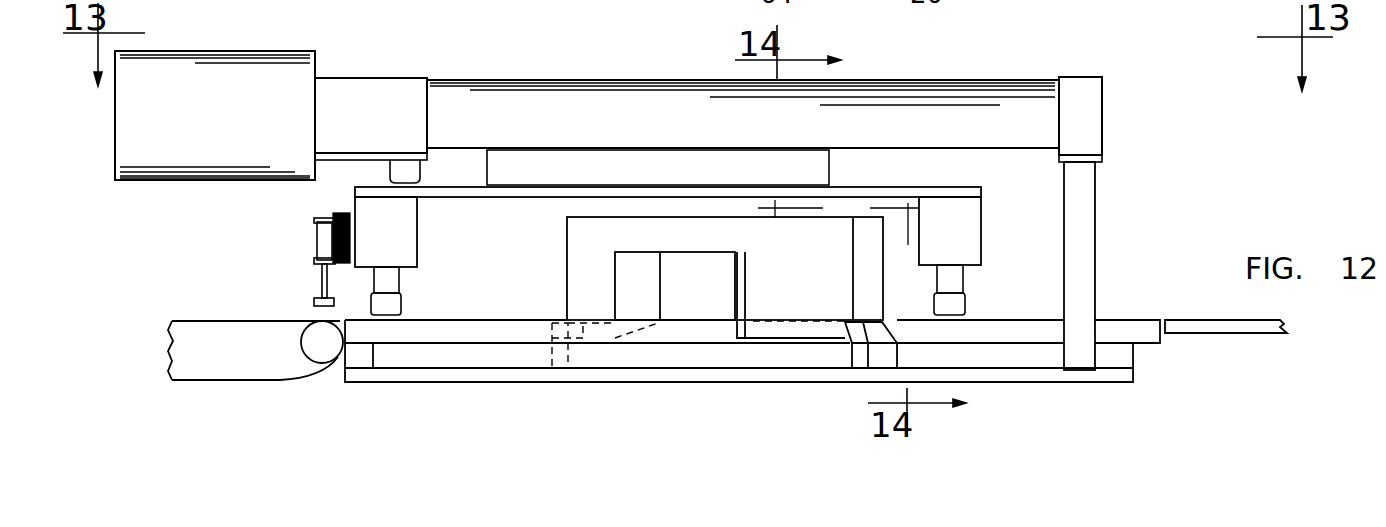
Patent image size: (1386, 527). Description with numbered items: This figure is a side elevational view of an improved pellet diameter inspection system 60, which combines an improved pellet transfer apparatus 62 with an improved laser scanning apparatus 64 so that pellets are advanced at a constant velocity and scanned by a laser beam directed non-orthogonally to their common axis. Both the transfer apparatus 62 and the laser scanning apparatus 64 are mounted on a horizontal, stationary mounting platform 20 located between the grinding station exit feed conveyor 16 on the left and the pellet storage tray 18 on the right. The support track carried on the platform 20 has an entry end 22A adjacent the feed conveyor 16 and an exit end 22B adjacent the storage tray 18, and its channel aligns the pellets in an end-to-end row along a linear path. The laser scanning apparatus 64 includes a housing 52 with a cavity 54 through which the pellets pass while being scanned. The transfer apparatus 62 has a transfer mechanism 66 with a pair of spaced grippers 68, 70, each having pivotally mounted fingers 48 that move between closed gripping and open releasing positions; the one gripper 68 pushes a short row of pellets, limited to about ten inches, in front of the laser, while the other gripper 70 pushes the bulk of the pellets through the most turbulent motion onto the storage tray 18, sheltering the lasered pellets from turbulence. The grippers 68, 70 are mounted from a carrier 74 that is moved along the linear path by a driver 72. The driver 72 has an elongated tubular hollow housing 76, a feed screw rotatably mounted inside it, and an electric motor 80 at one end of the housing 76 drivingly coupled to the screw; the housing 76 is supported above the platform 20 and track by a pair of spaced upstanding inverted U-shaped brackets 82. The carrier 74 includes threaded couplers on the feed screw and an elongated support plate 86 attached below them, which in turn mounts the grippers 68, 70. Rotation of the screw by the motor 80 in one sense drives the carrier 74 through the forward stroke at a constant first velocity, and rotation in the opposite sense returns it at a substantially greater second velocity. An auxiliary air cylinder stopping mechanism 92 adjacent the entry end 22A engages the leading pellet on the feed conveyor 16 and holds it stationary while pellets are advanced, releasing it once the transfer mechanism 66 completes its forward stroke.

The feed conveyor 16 is at (230, 375).
The storage tray 18 is at (1243, 333).
The mounting platform 20 is at (565, 378).
The entry end 22A is at (362, 335).
The exit end 22B is at (1145, 335).
The gripper fingers 48 is at (403, 305).
The housing 52 is at (567, 283).
The cavity 54 is at (717, 290).
The pellet diameter inspection system 60 is at (1125, 125).
The pellet transfer apparatus 62 is at (923, 80).
The laser scanning apparatus 64 is at (555, 243).
The transfer mechanism 66 is at (928, 177).
The first gripper 68 is at (417, 222).
The second gripper 70 is at (982, 243).
The driver 72 is at (395, 72).
The carrier 74 is at (838, 185).
The tubular hollow housing 76 is at (675, 80).
The electric motor 80 is at (277, 51).
The inverted U-shaped brackets 82 is at (418, 175).
The support plate 86 is at (565, 193).
The auxiliary air cylinder stopping mechanism 92 is at (321, 285).